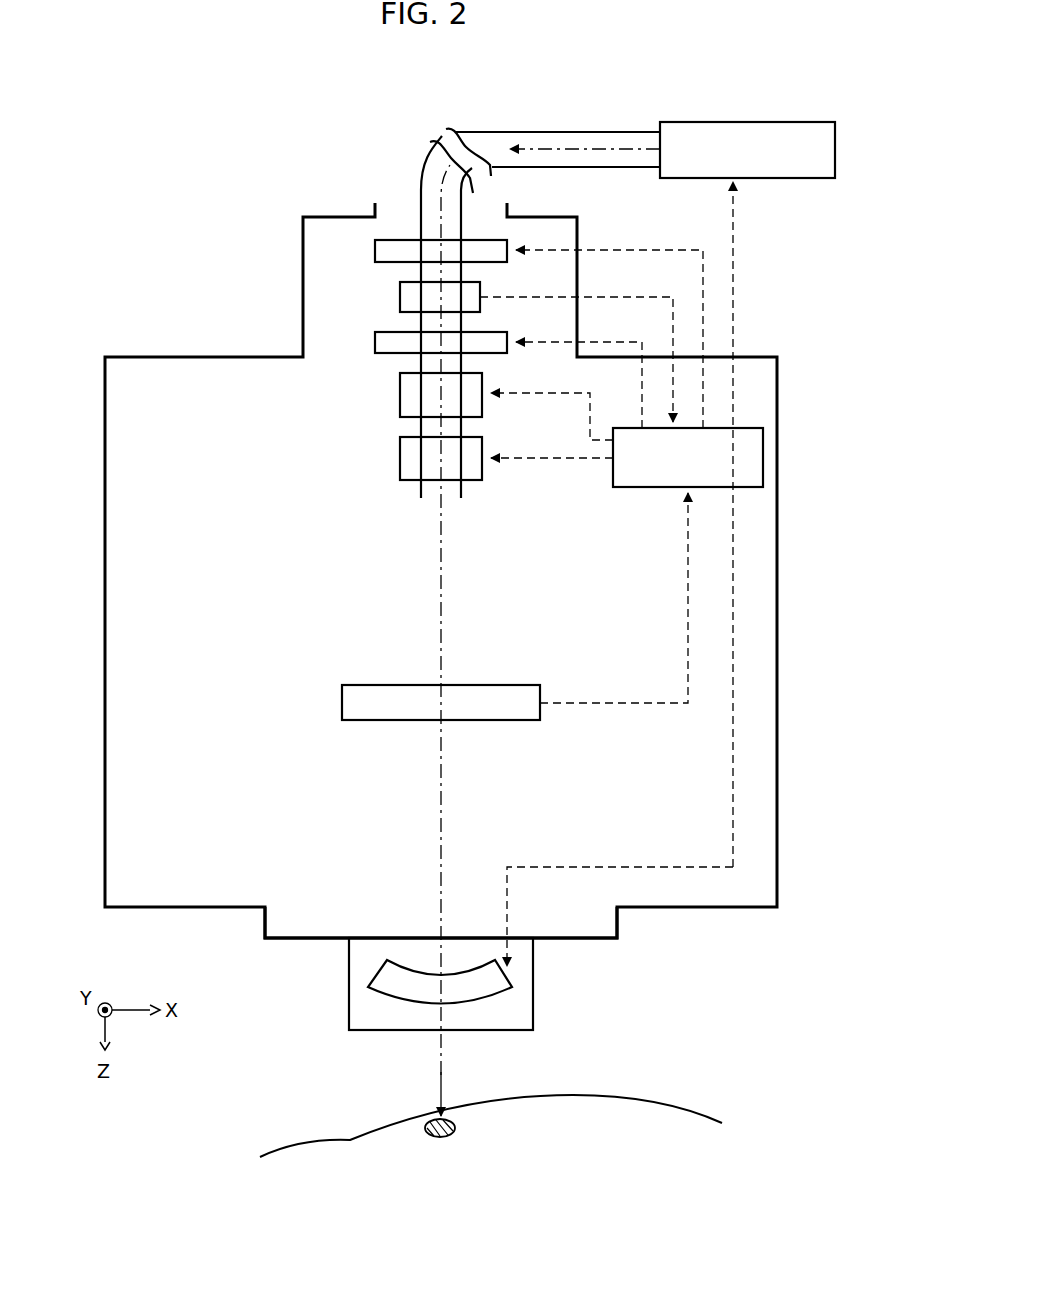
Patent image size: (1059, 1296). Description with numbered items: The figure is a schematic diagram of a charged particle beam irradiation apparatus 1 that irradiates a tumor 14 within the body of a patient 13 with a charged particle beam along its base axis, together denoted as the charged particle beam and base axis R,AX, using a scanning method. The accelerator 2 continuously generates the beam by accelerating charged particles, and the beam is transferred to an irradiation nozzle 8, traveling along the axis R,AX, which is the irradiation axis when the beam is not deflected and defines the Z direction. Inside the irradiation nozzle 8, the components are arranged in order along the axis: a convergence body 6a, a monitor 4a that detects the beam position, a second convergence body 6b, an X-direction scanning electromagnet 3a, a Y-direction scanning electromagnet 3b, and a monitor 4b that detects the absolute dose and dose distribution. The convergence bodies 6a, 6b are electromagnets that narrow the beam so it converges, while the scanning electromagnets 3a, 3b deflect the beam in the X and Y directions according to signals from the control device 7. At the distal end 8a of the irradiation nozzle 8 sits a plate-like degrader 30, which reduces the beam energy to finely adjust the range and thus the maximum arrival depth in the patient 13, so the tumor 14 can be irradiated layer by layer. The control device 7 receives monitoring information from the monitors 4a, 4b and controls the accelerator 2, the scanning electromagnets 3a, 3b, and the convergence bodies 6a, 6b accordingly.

The charged particle beam irradiation apparatus 1 is at (165, 150).
The accelerator 2 is at (810, 122).
The X-direction scanning electromagnet 3a is at (400, 393).
The Y-direction scanning electromagnet 3b is at (400, 458).
The monitor 4a is at (400, 297).
The monitor 4b is at (342, 700).
The convergence body 6a is at (375, 250).
The convergence body 6b is at (375, 343).
The control device 7 is at (742, 428).
The irradiation nozzle 8 is at (777, 570).
The distal end 8a is at (277, 925).
The degrader 30 is at (512, 980).
The patient 13 is at (300, 1140).
The tumor 14 is at (455, 1128).
The charged particle beam and base axis R,AX is at (443, 1078).